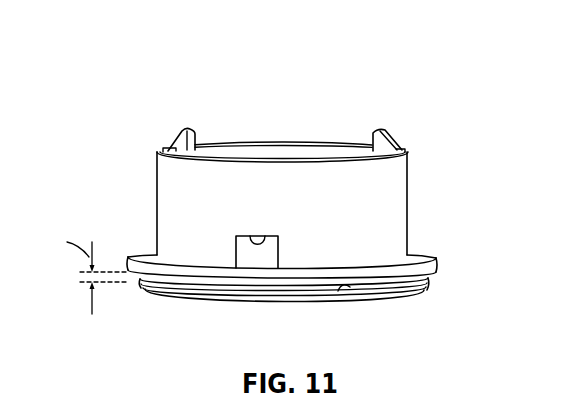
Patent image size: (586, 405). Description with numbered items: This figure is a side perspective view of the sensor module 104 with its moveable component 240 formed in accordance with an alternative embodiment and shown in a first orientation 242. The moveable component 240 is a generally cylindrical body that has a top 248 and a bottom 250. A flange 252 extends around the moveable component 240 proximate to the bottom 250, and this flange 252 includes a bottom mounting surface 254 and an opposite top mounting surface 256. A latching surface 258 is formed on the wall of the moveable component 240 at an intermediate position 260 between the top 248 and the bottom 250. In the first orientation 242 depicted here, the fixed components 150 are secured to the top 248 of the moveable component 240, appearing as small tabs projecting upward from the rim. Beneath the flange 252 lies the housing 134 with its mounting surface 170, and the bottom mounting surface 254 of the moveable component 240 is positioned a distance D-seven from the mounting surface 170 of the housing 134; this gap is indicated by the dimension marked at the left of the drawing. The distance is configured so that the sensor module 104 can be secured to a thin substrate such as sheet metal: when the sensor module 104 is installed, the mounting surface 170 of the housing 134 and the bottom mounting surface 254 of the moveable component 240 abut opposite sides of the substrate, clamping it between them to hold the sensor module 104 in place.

The sensor module 104 is at (435, 68).
The first orientation 242 is at (125, 114).
The top 248 is at (298, 122).
The fixed components 150 is at (190, 128).
The latching surface 258 is at (262, 242).
The intermediate position 260 is at (238, 236).
The moveable component 240 is at (415, 153).
The flange 252 is at (438, 267).
The top mounting surface 256 is at (423, 258).
The bottom mounting surface 254 is at (428, 288).
The bottom 250 is at (134, 284).
The housing 134 is at (268, 297).
The mounting surface 170 is at (347, 292).